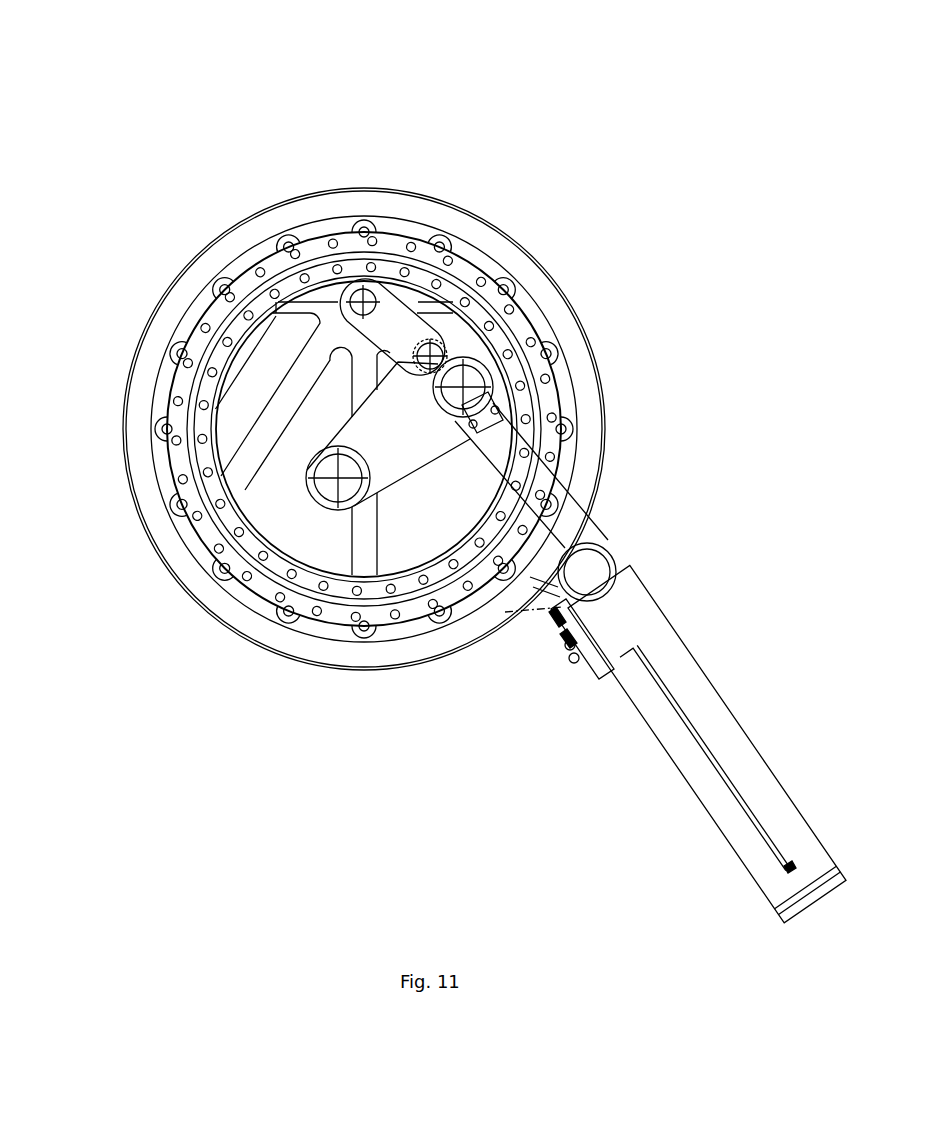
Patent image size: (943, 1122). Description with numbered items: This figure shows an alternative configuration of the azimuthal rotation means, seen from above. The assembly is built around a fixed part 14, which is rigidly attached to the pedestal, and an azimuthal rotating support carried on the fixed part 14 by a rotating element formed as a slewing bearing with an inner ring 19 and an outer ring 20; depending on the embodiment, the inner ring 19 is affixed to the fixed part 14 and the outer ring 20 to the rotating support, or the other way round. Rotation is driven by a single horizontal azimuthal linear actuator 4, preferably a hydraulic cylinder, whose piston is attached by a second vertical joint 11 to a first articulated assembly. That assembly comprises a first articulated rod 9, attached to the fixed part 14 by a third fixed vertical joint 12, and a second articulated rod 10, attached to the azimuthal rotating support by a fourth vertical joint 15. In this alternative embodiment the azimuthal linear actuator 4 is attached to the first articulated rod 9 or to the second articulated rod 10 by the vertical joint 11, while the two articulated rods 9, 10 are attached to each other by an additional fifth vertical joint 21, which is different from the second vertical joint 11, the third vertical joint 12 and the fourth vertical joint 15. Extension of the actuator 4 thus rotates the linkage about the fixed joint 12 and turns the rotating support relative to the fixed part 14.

The azimuthal linear actuator 4 is at (630, 627).
The first articulated rod 9 is at (402, 328).
The second articulated rod 10 is at (402, 433).
The second vertical joint 11 is at (466, 386).
The third fixed vertical joint 12 is at (357, 280).
The fixed part 14 is at (193, 538).
The fourth vertical joint 15 is at (338, 478).
The inner ring 19 is at (370, 592).
The outer ring 20 is at (335, 612).
The fifth vertical joint 21 is at (432, 356).